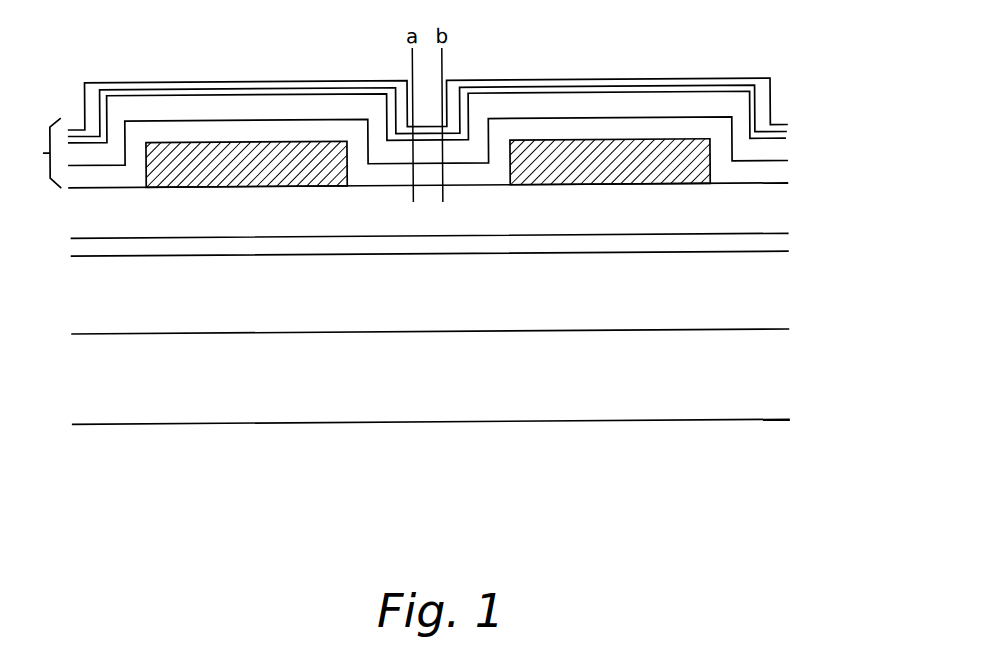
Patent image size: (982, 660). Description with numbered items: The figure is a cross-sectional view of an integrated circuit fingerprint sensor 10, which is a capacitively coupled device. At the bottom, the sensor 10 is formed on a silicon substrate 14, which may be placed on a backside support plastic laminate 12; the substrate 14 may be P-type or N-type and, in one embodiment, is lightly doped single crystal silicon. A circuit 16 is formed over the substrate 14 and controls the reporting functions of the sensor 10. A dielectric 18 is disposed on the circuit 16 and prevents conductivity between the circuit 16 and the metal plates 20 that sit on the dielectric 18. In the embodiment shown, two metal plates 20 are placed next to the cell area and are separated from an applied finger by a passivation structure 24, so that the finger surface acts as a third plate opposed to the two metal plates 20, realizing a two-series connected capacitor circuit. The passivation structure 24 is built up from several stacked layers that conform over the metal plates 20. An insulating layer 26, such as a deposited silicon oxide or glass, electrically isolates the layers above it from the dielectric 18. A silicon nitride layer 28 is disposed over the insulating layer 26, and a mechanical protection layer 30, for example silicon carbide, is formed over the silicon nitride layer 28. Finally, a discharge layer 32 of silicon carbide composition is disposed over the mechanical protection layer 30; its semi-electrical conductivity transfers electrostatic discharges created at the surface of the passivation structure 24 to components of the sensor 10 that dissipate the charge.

The sensor 10 is at (177, 454).
The backside support plastic laminate 12 is at (352, 390).
The silicon substrate 14 is at (352, 308).
The circuit 16 is at (776, 244).
The dielectric 18 is at (352, 224).
The metal plates 20 is at (230, 147).
The passivation structure 24 is at (36, 153).
The insulating layer 26 is at (779, 176).
The silicon nitride layer 28 is at (777, 150).
The mechanical protection layer 30 is at (785, 136).
The discharge layer 32 is at (792, 126).